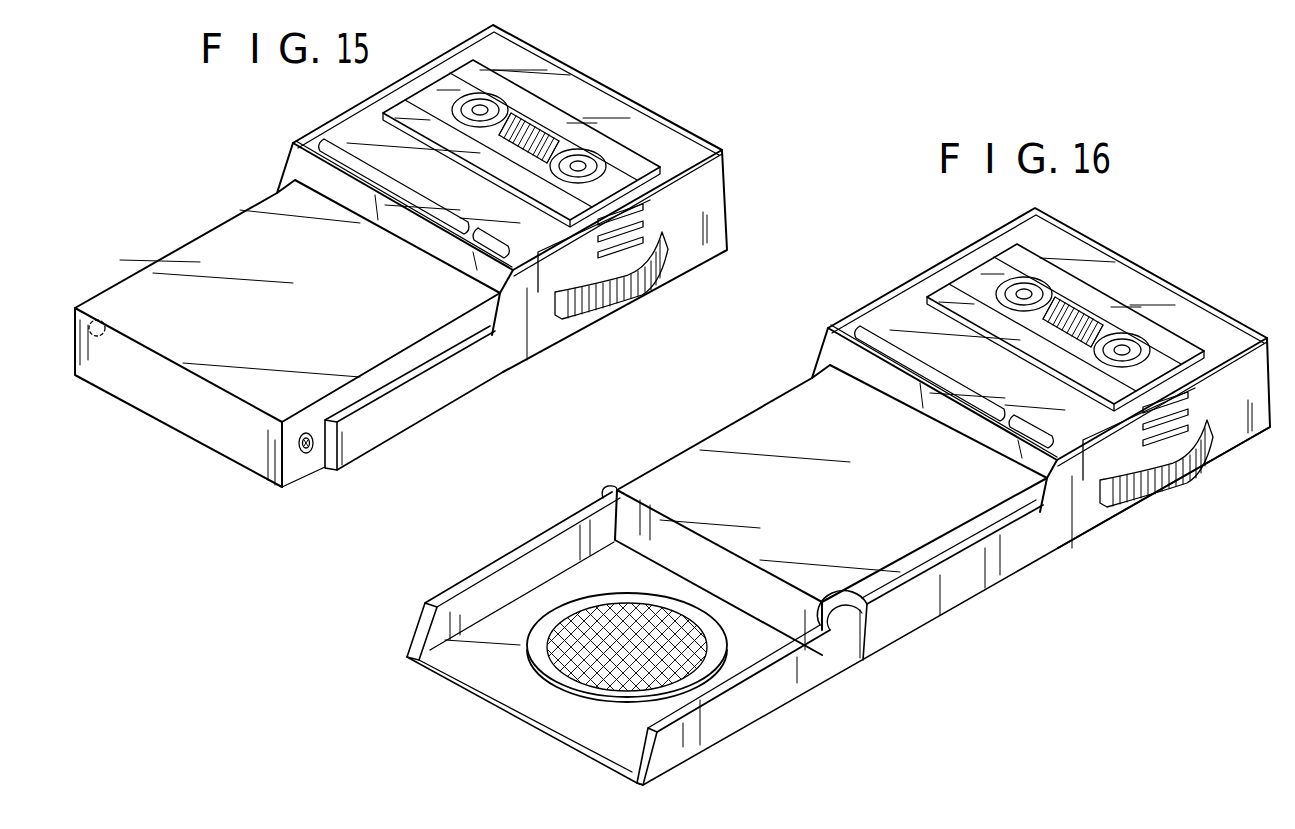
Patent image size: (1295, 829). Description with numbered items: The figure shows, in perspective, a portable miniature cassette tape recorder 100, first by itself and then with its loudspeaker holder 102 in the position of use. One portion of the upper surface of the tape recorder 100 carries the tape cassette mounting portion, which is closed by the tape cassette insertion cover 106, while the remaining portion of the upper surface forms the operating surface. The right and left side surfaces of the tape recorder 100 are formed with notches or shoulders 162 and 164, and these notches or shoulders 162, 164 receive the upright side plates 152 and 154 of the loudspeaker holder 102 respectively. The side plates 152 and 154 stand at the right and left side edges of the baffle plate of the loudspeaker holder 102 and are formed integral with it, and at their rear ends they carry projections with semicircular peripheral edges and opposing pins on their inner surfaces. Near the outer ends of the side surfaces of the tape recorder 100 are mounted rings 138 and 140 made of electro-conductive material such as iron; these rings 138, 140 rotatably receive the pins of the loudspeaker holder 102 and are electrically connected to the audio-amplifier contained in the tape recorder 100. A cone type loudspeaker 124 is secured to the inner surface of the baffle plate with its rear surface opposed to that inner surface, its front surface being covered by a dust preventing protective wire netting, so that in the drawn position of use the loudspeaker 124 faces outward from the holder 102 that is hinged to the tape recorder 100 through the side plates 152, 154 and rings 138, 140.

In FIG. 15, the tape recorder 100 is at (722, 214).
In FIG. 16, the tape recorder 100 is at (1263, 377).
In FIG. 16, the loudspeaker holder 102 is at (517, 542).
In FIG. 15, the tape cassette insertion cover 106 is at (618, 105).
In FIG. 16, the tape cassette insertion cover 106 is at (1127, 268).
In FIG. 16, the cone type loudspeaker 124 is at (546, 694).
In FIG. 15, the annular ring 138 is at (100, 336).
In FIG. 15, the annular ring 140 is at (308, 455).
In FIG. 16, the side plate 152 is at (470, 597).
In FIG. 16, the side plate 154 is at (755, 692).
In FIG. 15, the notch or shoulder 162 is at (197, 240).
In FIG. 16, the notch or shoulder 162 is at (718, 432).
In FIG. 15, the notch or shoulder 164 is at (400, 367).
In FIG. 16, the notch or shoulder 164 is at (943, 545).